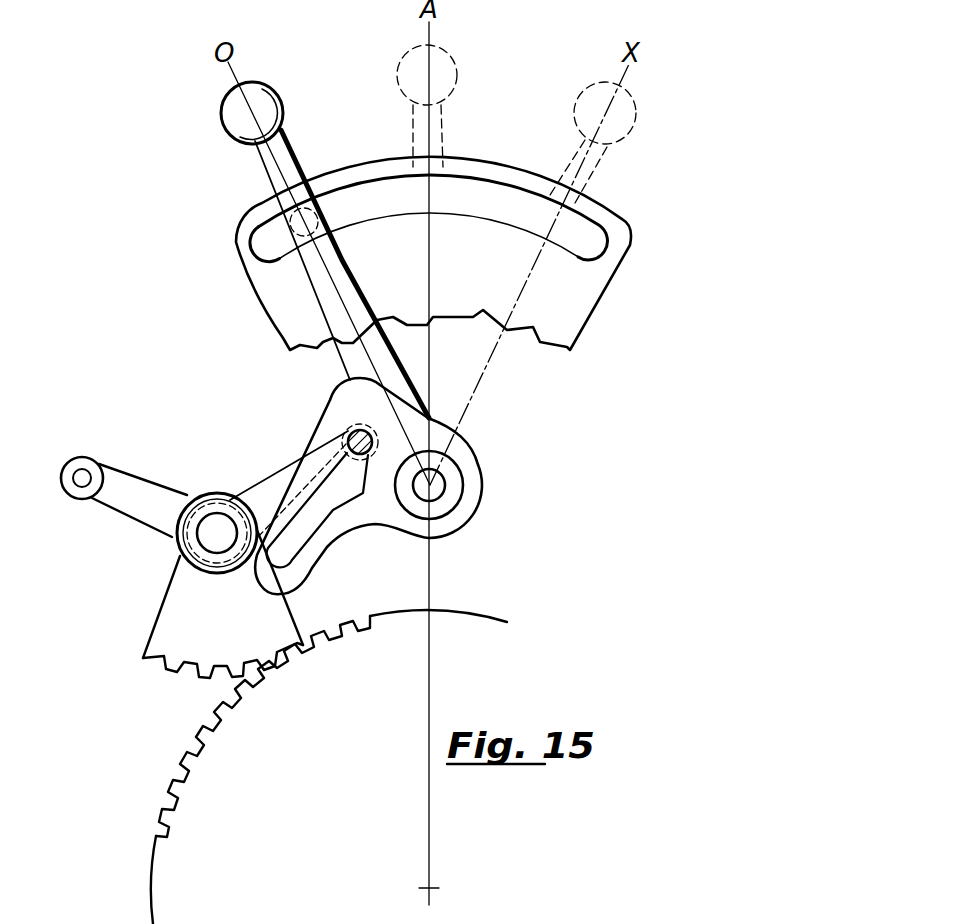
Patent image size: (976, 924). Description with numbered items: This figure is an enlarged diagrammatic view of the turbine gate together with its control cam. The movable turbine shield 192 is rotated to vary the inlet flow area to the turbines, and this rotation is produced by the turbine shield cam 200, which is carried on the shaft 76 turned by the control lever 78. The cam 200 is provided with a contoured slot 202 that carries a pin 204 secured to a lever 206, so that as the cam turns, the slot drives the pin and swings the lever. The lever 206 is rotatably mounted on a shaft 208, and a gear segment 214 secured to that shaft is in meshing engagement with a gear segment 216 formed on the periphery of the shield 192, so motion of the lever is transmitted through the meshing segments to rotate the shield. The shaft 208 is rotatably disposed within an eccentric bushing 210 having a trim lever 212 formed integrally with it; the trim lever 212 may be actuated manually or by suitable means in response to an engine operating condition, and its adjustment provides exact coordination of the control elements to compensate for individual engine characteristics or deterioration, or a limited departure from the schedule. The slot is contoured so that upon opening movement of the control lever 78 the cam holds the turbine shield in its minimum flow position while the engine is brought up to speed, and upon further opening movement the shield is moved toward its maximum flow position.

The shaft 76 is at (445, 490).
The control lever 78 is at (268, 158).
The turbine shield 192 is at (480, 630).
The turbine shield cam 200 is at (470, 505).
The slot 202 is at (320, 508).
The pin 204 is at (348, 432).
The lever 206 is at (261, 488).
The shaft 208 is at (212, 537).
The eccentric bushing 210 is at (207, 518).
The trim lever 212 is at (92, 468).
The gear segment 214 is at (234, 635).
The gear segment 216 is at (197, 735).